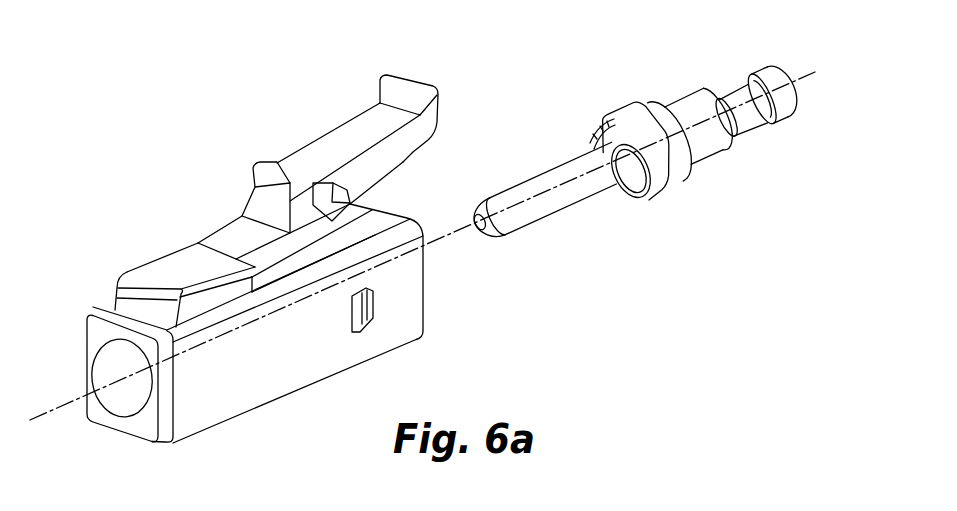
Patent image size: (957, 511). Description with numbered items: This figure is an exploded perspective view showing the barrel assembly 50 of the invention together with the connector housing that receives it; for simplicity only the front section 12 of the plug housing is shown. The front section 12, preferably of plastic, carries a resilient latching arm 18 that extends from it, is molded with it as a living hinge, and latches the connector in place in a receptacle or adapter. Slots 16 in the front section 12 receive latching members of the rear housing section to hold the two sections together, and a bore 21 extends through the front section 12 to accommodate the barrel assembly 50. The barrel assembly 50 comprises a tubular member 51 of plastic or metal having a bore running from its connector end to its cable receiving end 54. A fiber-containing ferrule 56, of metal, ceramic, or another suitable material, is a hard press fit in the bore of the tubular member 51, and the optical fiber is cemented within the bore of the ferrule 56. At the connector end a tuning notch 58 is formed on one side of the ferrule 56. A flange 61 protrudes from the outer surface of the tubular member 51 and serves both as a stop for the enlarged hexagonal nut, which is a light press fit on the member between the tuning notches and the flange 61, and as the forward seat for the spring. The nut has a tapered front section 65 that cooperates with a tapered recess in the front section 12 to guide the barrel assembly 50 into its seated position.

The front section 12 is at (265, 385).
The slots 16 is at (370, 323).
The resilient latching arm 18 is at (363, 132).
The bore 21 is at (128, 403).
The barrel assembly 50 is at (617, 193).
The tubular member 51 is at (720, 155).
The cable receiving end 54 is at (772, 70).
The ferrule 56 is at (540, 170).
The tuning notch 58 is at (597, 130).
The flange 61 is at (690, 172).
The tapered front section 65 is at (617, 120).